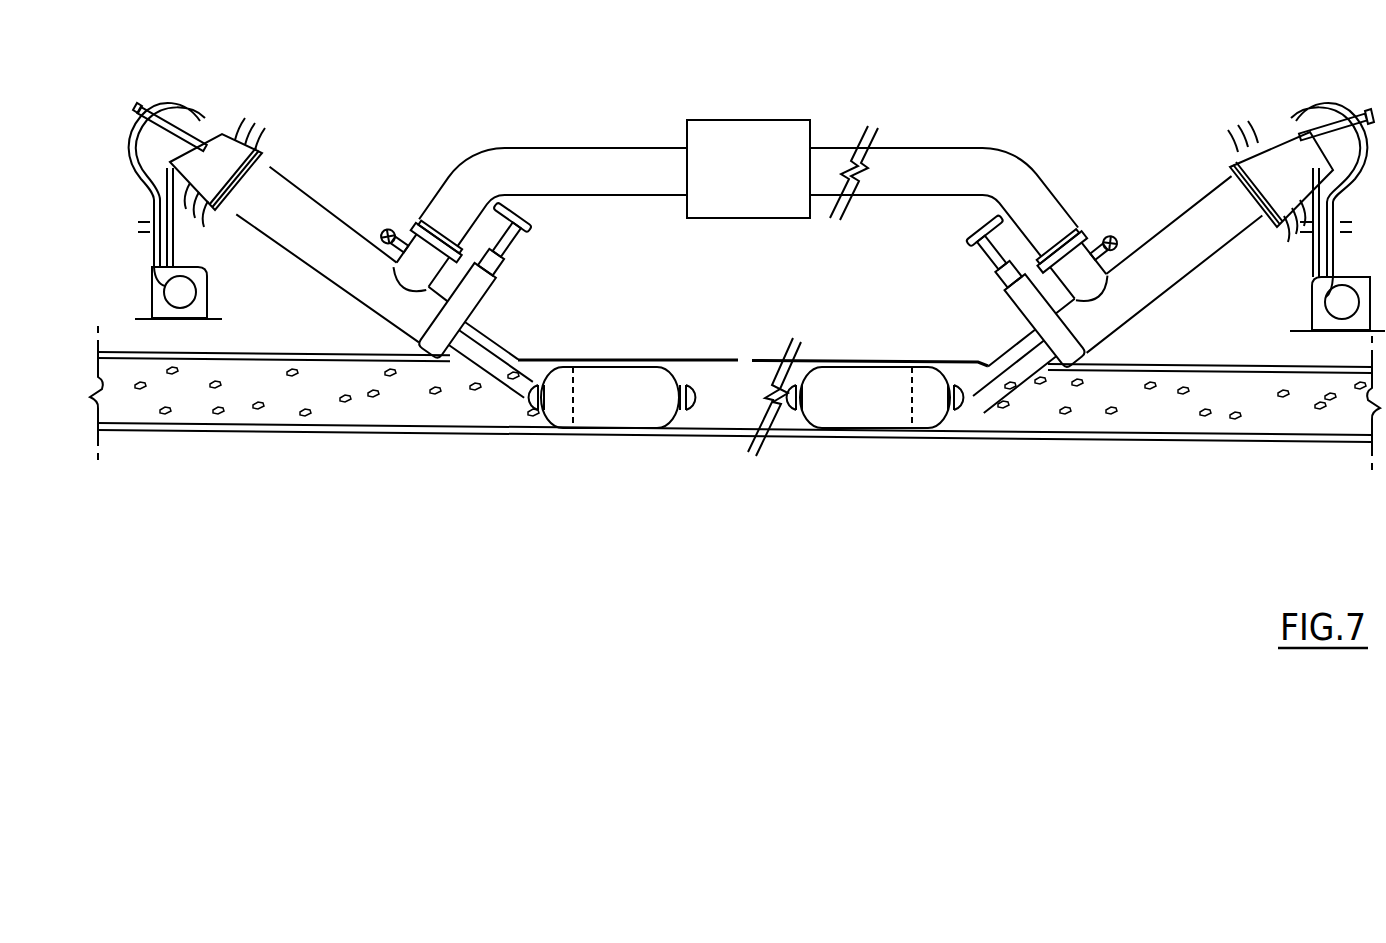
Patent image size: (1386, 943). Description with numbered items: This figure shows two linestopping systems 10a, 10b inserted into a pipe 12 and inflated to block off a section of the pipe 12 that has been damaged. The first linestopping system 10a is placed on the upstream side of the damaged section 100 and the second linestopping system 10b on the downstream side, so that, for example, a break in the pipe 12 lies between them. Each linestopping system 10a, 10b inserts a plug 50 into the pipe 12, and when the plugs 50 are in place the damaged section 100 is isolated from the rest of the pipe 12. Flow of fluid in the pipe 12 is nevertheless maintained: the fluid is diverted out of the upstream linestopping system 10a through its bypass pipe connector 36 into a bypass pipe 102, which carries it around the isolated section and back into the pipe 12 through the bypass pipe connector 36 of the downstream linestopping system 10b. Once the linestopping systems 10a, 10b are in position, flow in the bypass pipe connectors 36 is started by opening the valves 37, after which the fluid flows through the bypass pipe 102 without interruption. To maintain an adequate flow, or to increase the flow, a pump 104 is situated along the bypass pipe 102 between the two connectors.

The linestopping system 10a is at (298, 152).
The linestopping system 10b is at (1212, 159).
The pipe 12 is at (1086, 440).
The bypass pipe connector 36 is at (412, 218).
The valve 37 is at (383, 224).
The plug 50 is at (612, 442).
The damaged section 100 is at (743, 360).
The bypass pipe 102 is at (531, 146).
The pump 104 is at (725, 120).